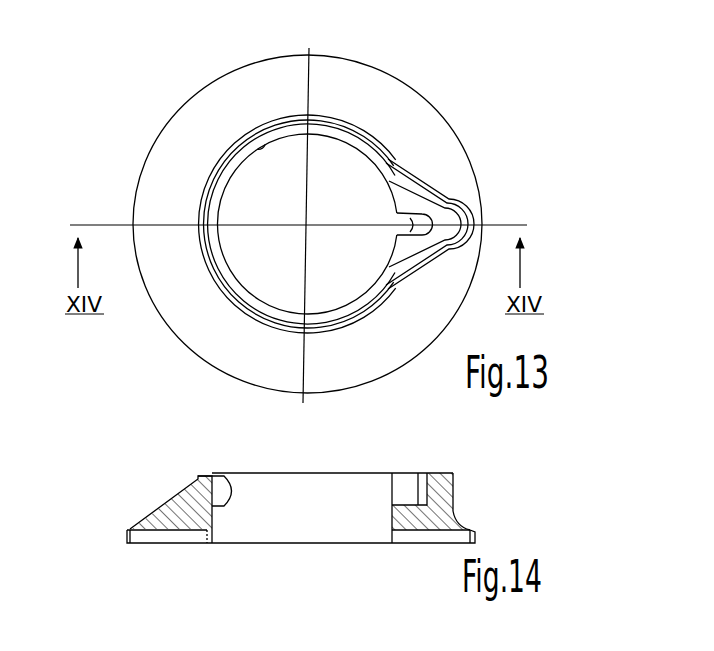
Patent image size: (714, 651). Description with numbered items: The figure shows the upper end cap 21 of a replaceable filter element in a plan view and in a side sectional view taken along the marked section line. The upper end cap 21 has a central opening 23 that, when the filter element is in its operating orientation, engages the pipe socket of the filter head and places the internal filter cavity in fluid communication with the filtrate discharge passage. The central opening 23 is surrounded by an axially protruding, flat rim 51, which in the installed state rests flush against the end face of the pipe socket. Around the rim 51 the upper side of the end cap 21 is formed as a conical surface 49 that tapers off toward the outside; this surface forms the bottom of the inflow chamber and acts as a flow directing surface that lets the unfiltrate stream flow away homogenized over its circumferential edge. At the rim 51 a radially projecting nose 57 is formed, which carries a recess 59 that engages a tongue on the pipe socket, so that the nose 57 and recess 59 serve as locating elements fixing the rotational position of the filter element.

In FIG. 13, the upper end cap 21 is at (476, 120).
In FIG. 14, the upper end cap 21 is at (476, 535).
In FIG. 13, the central opening 23 is at (253, 147).
In FIG. 14, the central opening 23 is at (227, 473).
In FIG. 13, the conical surface 49 is at (458, 187).
In FIG. 14, the conical surface 49 is at (163, 508).
In FIG. 13, the axially protruding rim 51 is at (350, 143).
In FIG. 14, the axially protruding rim 51 is at (203, 472).
In FIG. 13, the radially projecting nose 57 is at (447, 217).
In FIG. 14, the radially projecting nose 57 is at (455, 488).
In FIG. 13, the recess 59 is at (410, 212).
In FIG. 14, the recess 59 is at (408, 490).